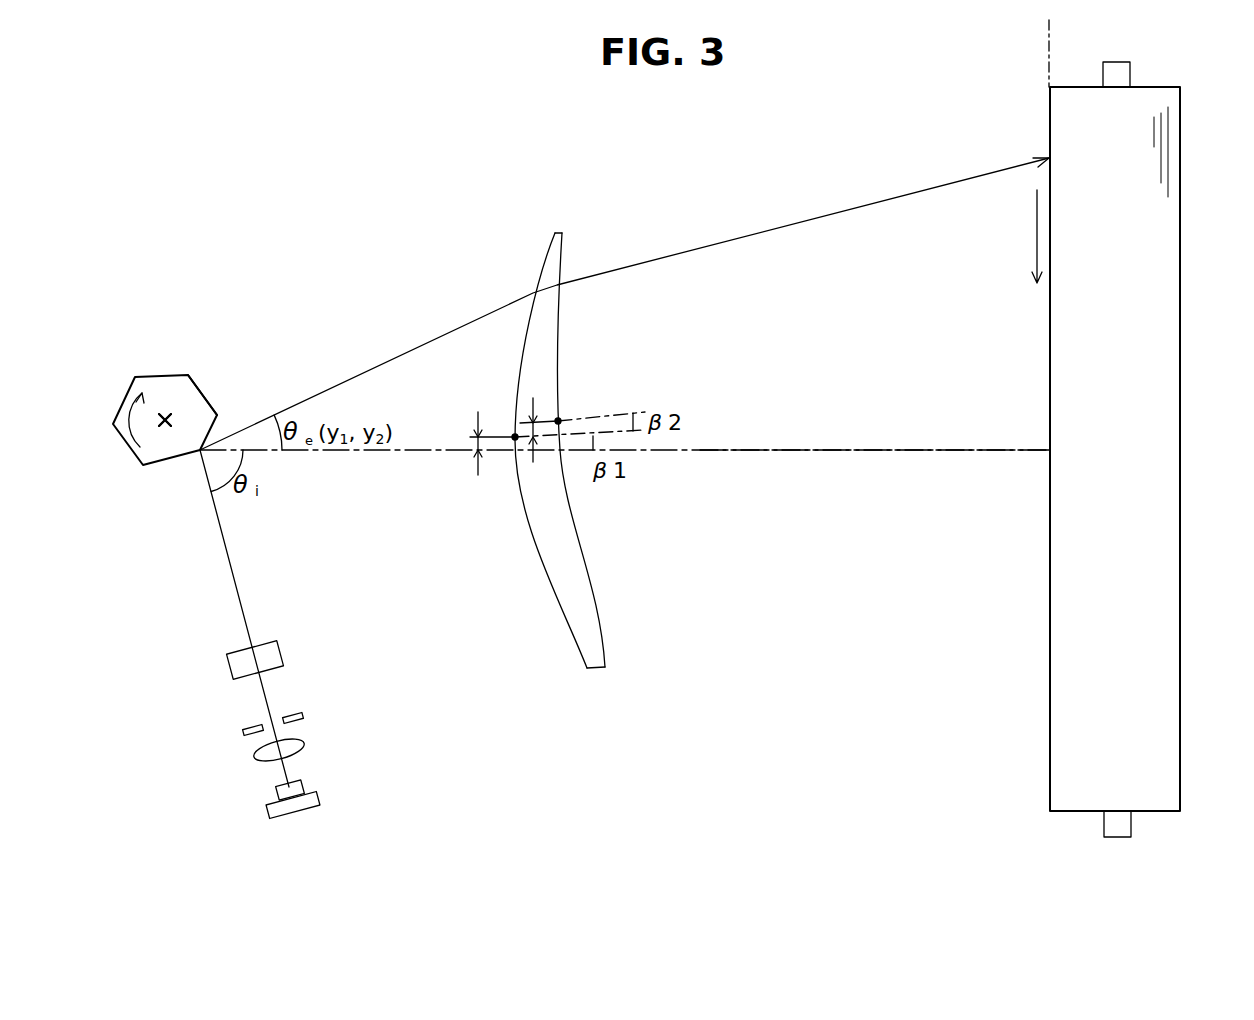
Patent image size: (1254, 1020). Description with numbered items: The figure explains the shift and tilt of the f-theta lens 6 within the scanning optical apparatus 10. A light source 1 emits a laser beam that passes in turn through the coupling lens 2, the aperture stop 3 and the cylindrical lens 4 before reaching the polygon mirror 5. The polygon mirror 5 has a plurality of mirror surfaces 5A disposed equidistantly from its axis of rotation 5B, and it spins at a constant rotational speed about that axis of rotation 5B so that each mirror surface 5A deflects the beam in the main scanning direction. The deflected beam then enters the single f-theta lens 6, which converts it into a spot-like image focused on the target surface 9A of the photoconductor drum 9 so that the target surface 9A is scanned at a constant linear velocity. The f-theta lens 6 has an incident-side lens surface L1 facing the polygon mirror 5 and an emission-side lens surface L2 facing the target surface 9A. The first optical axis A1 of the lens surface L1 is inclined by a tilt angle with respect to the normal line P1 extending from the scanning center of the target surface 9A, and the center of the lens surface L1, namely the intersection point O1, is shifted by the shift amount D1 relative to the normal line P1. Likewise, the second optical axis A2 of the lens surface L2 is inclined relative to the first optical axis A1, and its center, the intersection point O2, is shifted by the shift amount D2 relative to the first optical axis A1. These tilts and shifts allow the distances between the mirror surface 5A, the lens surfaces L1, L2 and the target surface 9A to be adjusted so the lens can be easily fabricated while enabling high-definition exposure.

The scanning optical apparatus 10 is at (276, 156).
The light source 1 is at (320, 800).
The coupling lens 2 is at (305, 745).
The aperture stop 3 is at (305, 718).
The cylindrical lens 4 is at (283, 652).
The polygon mirror 5 is at (177, 380).
The mirror surface 5A is at (218, 417).
The axis of rotation 5B is at (165, 430).
The f-theta lens 6 is at (559, 486).
The incident-side lens surface L1 is at (537, 545).
The emission-side lens surface L2 is at (583, 538).
The intersection point O1 is at (515, 437).
The intersection point O2 is at (558, 421).
The first optical axis A1 is at (623, 431).
The second optical axis A2 is at (623, 411).
The shift amount D1 is at (460, 443).
The shift amount D2 is at (537, 416).
The normal line P1 is at (808, 450).
The photoconductor drum 9 is at (1152, 287).
The target surface 9A is at (1049, 48).